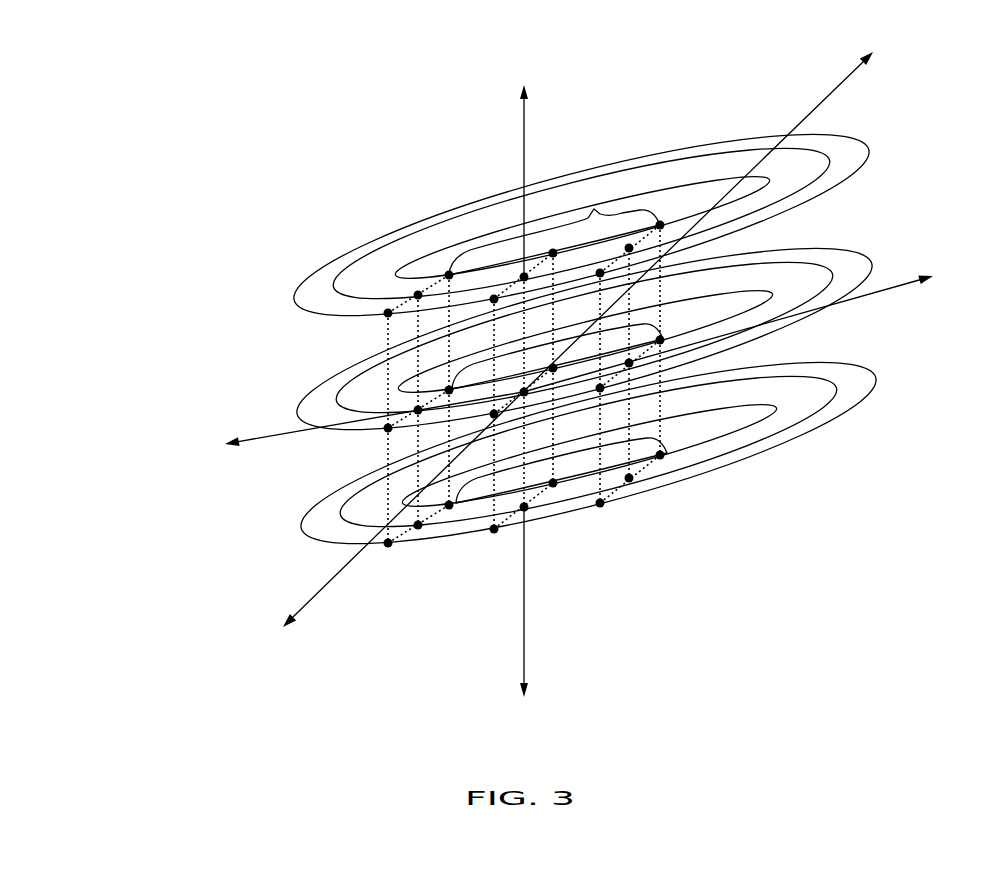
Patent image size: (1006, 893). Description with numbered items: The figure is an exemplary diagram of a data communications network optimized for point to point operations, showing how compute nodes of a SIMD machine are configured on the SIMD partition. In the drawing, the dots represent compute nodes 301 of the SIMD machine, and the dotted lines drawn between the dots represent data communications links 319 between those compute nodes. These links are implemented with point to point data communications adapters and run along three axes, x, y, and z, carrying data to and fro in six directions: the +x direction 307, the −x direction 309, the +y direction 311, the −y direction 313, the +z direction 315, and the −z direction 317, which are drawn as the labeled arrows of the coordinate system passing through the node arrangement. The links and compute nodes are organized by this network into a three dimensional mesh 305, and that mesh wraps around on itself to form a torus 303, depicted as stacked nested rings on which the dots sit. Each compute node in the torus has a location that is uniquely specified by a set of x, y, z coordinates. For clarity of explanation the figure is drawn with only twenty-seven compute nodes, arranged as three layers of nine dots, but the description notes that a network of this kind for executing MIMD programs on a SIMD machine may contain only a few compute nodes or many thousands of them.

The compute nodes 301 is at (655, 468).
The torus 303 is at (370, 226).
The three dimensional mesh 305 is at (524, 235).
The +x direction 307 is at (750, 323).
The −x direction 309 is at (345, 434).
The +y direction 311 is at (719, 208).
The −y direction 313 is at (379, 533).
The +z direction 315 is at (522, 150).
The −z direction 317 is at (529, 632).
The data communications links 319 is at (388, 339).